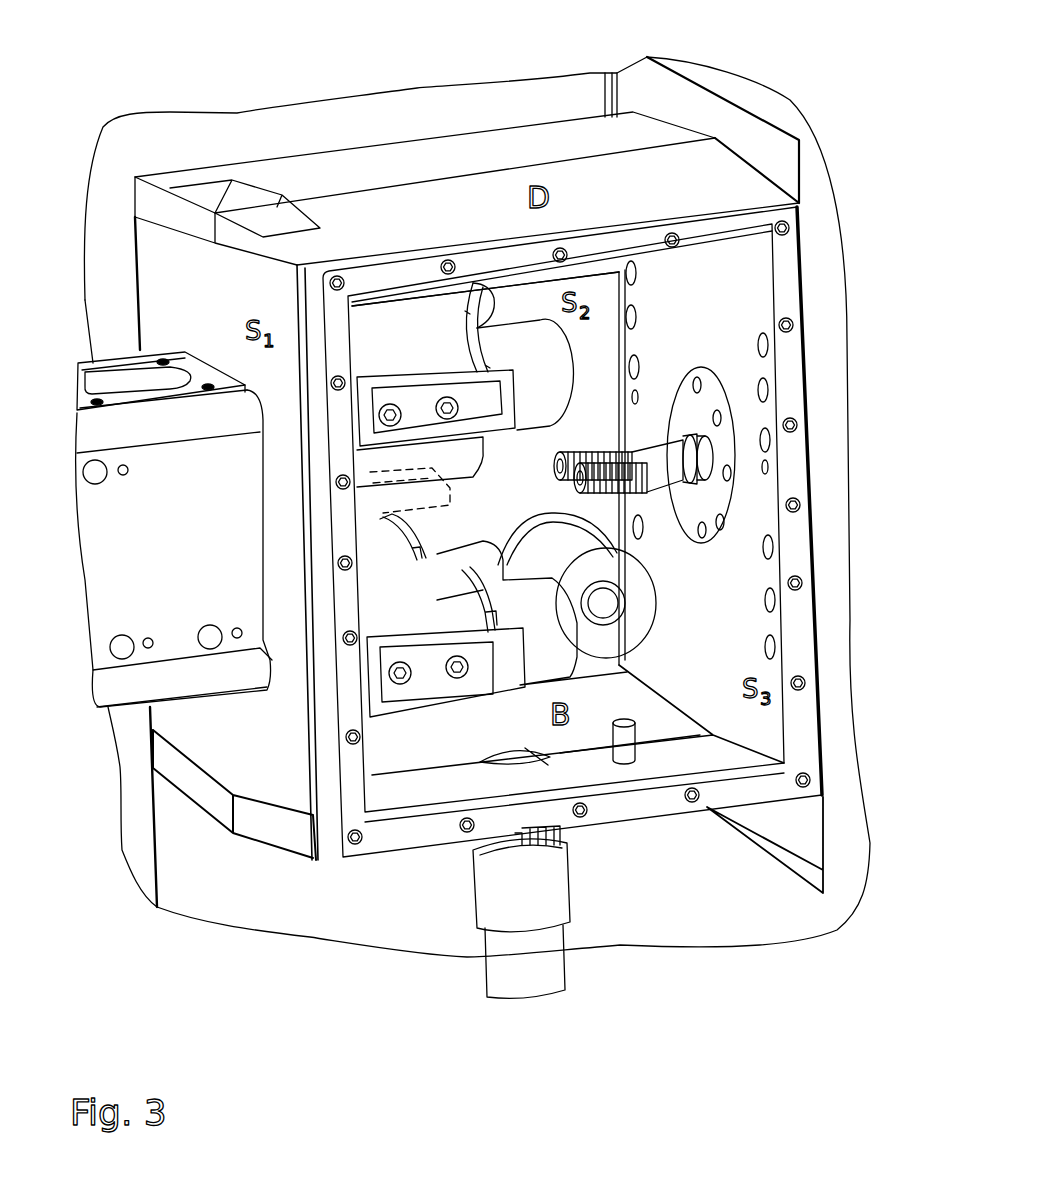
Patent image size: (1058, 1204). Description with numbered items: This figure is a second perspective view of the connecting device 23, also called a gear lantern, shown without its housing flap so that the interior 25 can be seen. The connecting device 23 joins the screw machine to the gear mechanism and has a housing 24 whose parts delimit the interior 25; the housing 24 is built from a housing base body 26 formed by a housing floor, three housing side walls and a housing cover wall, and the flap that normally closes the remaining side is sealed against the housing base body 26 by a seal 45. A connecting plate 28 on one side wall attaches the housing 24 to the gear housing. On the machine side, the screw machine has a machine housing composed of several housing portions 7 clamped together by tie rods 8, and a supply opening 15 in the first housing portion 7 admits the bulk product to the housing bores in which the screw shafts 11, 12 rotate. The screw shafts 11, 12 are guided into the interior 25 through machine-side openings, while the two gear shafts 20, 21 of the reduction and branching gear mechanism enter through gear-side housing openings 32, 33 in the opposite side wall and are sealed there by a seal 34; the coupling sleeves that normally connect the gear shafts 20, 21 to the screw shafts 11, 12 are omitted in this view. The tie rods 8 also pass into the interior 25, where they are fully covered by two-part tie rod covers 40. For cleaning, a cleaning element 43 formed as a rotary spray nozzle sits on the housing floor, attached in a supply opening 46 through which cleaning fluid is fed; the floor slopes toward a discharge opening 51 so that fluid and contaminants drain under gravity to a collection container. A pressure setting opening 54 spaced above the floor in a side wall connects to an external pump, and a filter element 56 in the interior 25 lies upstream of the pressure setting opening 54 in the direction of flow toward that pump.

The housing portion 7 is at (182, 633).
The tie rod 8 is at (140, 345).
The screw shaft 11 is at (420, 510).
The screw shaft 12 is at (372, 477).
The supply opening 15 is at (122, 383).
The gear shaft 20 is at (677, 473).
The gear shaft 21 is at (727, 476).
The connecting device 23 is at (433, 90).
The housing 24 is at (383, 137).
The interior 25 is at (489, 502).
The housing base body 26 is at (323, 152).
The connecting plate 28 is at (770, 148).
The gear-side housing opening 32 is at (713, 463).
The gear-side housing opening 33 is at (663, 457).
The seal 34 is at (690, 453).
The tie rod cover 40 is at (438, 350).
The cleaning element 43 is at (635, 757).
The seal 45 is at (487, 822).
The supply opening 46 is at (615, 758).
The discharge opening 51 is at (548, 765).
The pressure setting opening 54 is at (625, 518).
The filter element 56 is at (563, 550).